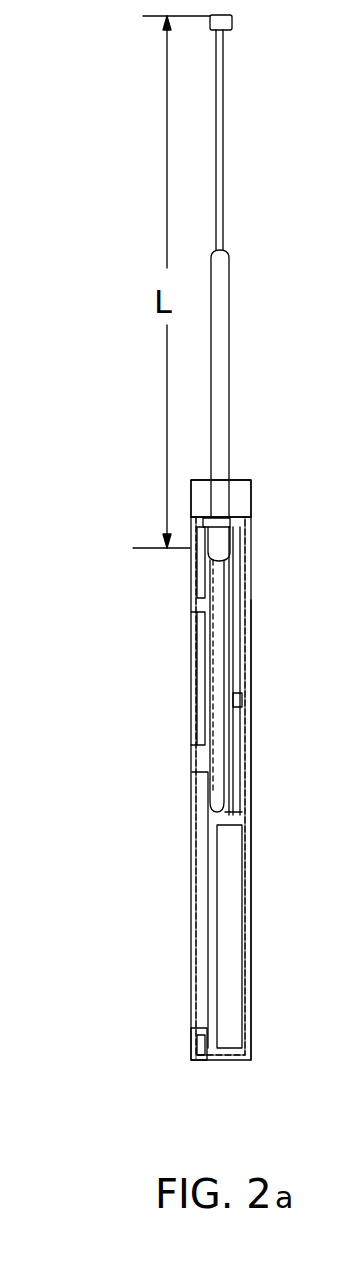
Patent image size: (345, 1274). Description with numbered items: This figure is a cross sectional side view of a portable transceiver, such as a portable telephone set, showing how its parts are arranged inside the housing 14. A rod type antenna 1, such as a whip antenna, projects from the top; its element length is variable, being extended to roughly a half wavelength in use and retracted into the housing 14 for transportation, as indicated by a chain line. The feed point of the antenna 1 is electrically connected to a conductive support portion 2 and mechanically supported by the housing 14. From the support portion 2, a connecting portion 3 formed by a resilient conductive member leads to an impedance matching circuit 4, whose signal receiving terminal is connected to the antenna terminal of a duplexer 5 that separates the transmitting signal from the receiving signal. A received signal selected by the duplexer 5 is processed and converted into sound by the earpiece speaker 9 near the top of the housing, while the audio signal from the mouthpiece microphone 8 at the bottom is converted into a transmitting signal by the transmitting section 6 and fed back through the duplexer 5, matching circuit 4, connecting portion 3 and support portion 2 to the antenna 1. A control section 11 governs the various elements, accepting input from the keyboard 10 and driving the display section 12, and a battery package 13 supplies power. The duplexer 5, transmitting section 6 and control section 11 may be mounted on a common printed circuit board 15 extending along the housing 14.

The antenna 1 is at (226, 93).
The conductive support portion 2 is at (232, 511).
The connecting portion 3 is at (238, 522).
The impedance matching circuit 4 is at (240, 563).
The duplexer 5 is at (240, 612).
The transmitting section 6 is at (237, 653).
The printed circuit board 15 is at (238, 722).
The control section 11 is at (237, 777).
The earpiece speaker 9 is at (202, 566).
The display section 12 is at (191, 675).
The keyboard 10 is at (191, 896).
The battery package 13 is at (242, 923).
The housing 14 is at (252, 1010).
The mouthpiece microphone 8 is at (200, 1045).